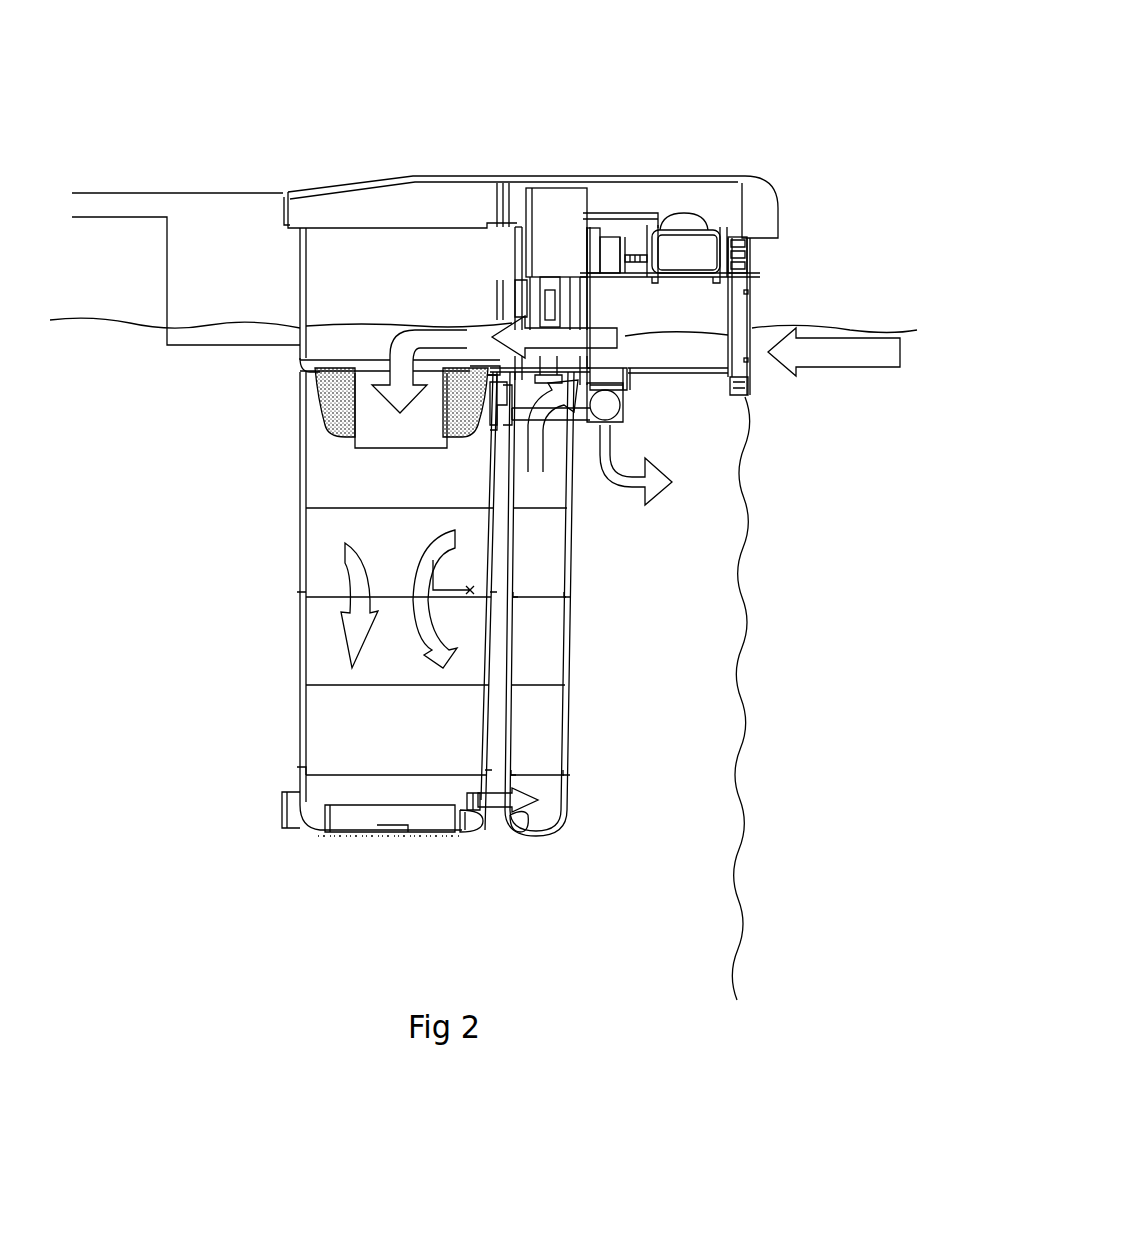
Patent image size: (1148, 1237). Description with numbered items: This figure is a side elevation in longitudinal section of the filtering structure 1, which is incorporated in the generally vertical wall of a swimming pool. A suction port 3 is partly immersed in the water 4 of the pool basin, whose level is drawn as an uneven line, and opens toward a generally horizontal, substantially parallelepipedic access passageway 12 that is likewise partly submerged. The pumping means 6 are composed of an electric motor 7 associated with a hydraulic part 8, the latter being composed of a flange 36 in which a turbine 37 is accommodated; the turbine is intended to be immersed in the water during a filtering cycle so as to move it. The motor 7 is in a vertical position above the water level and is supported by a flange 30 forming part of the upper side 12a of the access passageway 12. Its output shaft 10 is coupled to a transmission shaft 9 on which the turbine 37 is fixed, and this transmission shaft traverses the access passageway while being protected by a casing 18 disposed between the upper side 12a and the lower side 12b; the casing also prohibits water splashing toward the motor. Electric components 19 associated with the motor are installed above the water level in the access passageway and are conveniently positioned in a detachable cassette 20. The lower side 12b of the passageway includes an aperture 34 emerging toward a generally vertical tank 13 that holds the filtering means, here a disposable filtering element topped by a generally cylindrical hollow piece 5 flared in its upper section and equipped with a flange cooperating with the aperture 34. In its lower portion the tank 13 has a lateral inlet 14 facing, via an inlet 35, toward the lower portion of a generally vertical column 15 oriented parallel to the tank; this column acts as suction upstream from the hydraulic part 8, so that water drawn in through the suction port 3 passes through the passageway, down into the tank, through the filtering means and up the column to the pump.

The filtering structure 1 is at (803, 106).
The suction port 3 is at (756, 350).
The water 4 is at (927, 392).
The generally cylindrical hollow piece 5 is at (333, 413).
The pumping means 6 is at (596, 362).
The electric motor 7 is at (553, 214).
The hydraulic part 8 is at (590, 400).
The transmission shaft 9 is at (623, 214).
The output shaft 10 is at (542, 291).
The access passageway 12 is at (414, 311).
The upper side 12a is at (608, 261).
The lower side 12b is at (650, 394).
The tank 13 is at (292, 603).
The lateral inlet 14 is at (455, 832).
The column 15 is at (582, 697).
The casing 18 is at (507, 298).
The electric components 19 is at (692, 221).
The detachable cassette 20 is at (740, 235).
The flange 30 is at (538, 290).
The aperture 34 is at (366, 374).
The inlet 35 is at (524, 834).
The flange 36 is at (567, 417).
The turbine 37 is at (580, 398).